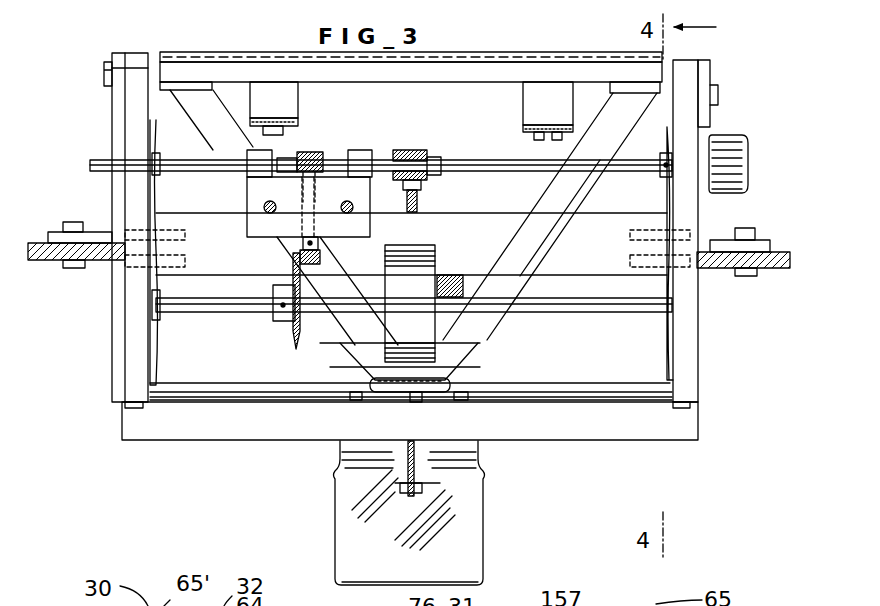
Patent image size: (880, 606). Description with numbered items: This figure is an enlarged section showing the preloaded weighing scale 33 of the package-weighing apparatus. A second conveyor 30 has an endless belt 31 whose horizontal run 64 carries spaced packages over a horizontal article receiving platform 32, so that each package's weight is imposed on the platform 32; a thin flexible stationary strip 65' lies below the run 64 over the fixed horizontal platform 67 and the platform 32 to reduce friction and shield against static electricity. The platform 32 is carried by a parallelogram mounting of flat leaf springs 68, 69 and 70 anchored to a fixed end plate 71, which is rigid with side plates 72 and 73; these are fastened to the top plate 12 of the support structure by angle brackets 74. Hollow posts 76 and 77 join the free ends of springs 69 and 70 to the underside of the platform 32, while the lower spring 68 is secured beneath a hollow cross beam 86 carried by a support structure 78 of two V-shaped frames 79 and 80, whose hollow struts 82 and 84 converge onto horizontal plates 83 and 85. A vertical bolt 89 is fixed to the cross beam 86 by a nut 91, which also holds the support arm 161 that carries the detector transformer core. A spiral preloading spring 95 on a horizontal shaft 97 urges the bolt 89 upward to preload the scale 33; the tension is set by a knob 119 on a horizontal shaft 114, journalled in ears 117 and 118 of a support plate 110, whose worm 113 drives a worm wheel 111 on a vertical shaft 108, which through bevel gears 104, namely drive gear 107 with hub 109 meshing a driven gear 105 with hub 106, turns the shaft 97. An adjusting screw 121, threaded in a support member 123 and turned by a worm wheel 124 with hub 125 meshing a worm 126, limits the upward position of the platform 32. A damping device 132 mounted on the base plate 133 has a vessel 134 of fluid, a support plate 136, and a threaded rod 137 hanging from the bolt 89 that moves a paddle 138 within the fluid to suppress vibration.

The top plate 12 is at (58, 254).
The second conveyor 30 is at (184, 46).
The endless belt 31 is at (242, 52).
The weighing platform 32 is at (428, 81).
The scale 33 is at (121, 343).
The horizontal run 64 is at (573, 57).
The stationary strip 65' is at (106, 73).
The fixed horizontal platform 67 is at (135, 63).
The flat leaf spring 68 is at (420, 378).
The flat leaf spring 69 is at (532, 120).
The flat leaf spring 70 is at (294, 88).
The end plate 71 is at (666, 207).
The side plate 72 is at (681, 117).
The side plate 73 is at (132, 317).
The angle bracket 74 is at (106, 234).
The hollow post 76 is at (544, 94).
The hollow post 77 is at (282, 80).
The support structure 78 is at (623, 102).
The V-shaped frame 79 is at (560, 236).
The V-shaped frame 80 is at (245, 178).
The hollow strut 82 is at (522, 240).
The horizontal plate 83 is at (442, 348).
The hollow strut 84 is at (222, 124).
The horizontal plate 85 is at (338, 343).
The cross beam 86 is at (371, 367).
The bolt 89 is at (417, 402).
The nut 91 is at (394, 398).
The spiral preloading spring 95 is at (425, 302).
The horizontal shaft 97 is at (235, 304).
The bevel gears 104 is at (282, 250).
The driven gear 105 is at (293, 335).
The hub 106 is at (274, 295).
The drive gear 107 is at (319, 257).
The vertical shaft 108 is at (308, 225).
The hub 109 is at (317, 243).
The support plate 110 is at (252, 225).
The worm wheel 111 is at (330, 158).
The worm 113 is at (306, 150).
The horizontal shaft 114 is at (90, 163).
The ear 117 is at (246, 158).
The ear 118 is at (360, 150).
The knob 119 is at (735, 165).
The adjusting screw 121 is at (419, 203).
The support member 123 is at (490, 242).
The worm wheel 124 is at (445, 140).
The hub 125 is at (423, 184).
The worm 126 is at (412, 150).
The damping device 132 is at (482, 497).
The base plate 133 is at (235, 403).
The vessel 134 is at (462, 540).
The support plate 136 is at (580, 435).
The threaded rod 137 is at (370, 460).
The paddle 138 is at (397, 491).
The support arm 161 is at (442, 386).